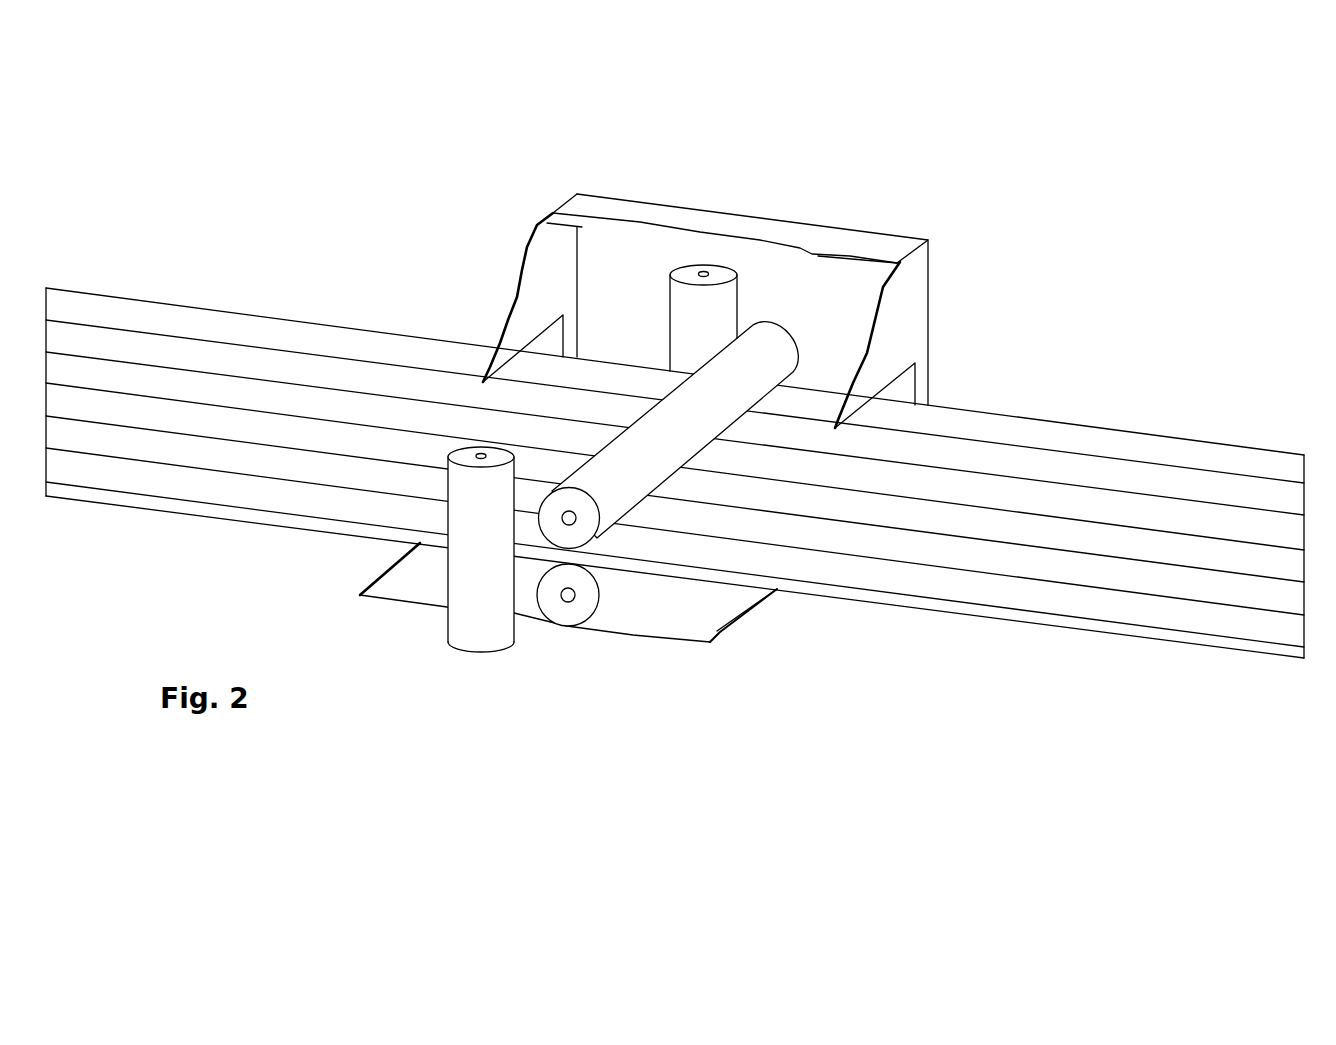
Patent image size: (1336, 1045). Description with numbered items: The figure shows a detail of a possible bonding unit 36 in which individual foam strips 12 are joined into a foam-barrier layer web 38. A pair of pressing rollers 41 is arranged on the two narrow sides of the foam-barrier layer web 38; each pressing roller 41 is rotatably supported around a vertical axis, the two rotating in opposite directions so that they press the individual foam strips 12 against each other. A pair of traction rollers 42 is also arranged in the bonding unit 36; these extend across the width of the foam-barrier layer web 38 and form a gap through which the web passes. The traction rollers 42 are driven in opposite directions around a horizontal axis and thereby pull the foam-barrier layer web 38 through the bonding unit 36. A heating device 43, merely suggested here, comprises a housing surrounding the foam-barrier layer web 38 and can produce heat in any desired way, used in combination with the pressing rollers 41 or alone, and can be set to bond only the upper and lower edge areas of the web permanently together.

The foam strips 12 is at (232, 495).
The bonding unit 36 is at (803, 164).
The foam-barrier layer web 38 is at (328, 475).
The pressing rollers 41 is at (692, 280).
The traction rollers 42 is at (615, 578).
The heating device 43 is at (603, 262).